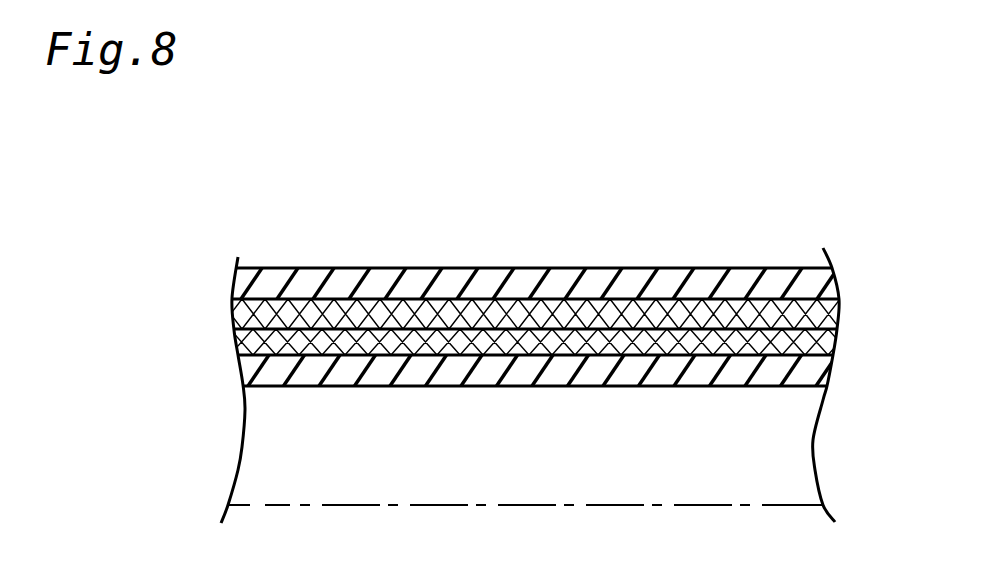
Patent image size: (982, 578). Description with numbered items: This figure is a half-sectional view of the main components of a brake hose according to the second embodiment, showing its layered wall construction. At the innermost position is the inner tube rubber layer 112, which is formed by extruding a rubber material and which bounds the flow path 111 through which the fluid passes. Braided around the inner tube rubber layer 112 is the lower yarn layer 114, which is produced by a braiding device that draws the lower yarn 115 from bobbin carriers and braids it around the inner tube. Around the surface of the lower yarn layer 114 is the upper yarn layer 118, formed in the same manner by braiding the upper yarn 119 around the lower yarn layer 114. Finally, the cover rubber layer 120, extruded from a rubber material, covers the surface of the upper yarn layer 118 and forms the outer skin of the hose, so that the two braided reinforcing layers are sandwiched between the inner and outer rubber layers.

The flow path 111 is at (252, 447).
The inner tube rubber layer 112 is at (243, 369).
The lower yarn layer 114 is at (473, 356).
The lower yarn 115 is at (242, 347).
The upper yarn layer 118 is at (467, 298).
The upper yarn 119 is at (236, 303).
The cover rubber layer 120 is at (268, 278).